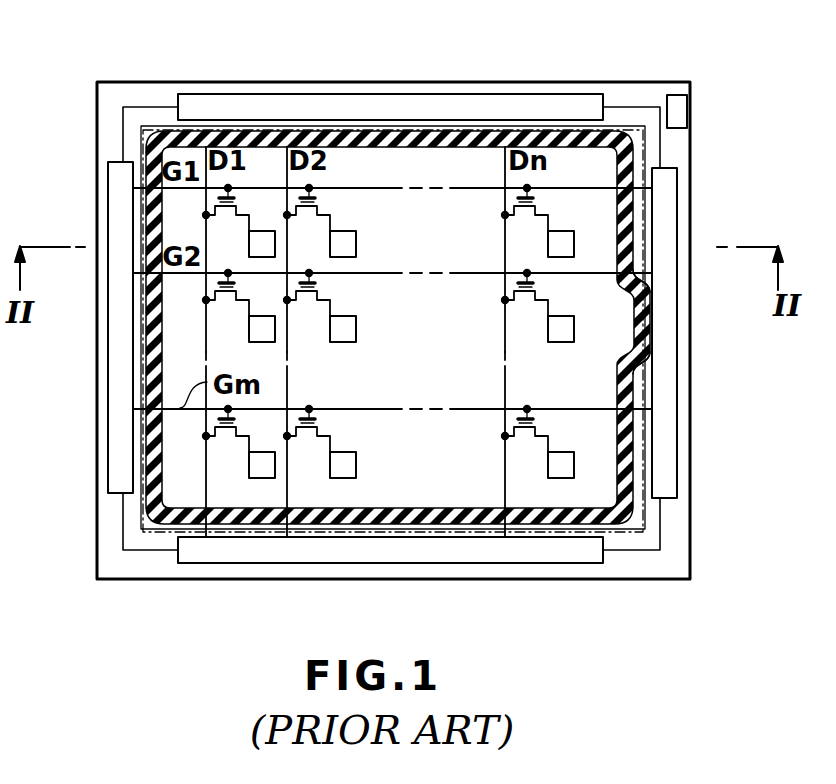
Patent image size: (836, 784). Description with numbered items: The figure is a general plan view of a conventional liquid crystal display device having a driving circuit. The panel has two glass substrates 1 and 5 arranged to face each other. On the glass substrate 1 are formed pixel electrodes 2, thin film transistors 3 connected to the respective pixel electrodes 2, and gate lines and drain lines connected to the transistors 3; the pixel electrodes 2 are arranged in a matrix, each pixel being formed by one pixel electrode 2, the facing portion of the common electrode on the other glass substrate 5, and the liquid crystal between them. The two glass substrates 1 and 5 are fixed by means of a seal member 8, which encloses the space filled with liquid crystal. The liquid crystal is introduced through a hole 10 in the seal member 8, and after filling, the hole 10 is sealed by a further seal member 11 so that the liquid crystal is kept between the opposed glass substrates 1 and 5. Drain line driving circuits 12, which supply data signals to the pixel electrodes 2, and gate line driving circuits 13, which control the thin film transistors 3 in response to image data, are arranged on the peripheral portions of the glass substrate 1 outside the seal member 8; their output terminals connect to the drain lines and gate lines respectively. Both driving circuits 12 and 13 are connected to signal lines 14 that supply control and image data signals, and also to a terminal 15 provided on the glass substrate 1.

The glass substrate 1 is at (593, 82).
The pixel electrode 2 is at (414, 356).
The thin film transistor 3 is at (387, 319).
The glass substrate 5 is at (163, 528).
The seal member 8 is at (151, 355).
The hole 10 is at (652, 312).
The seal member 11 is at (645, 355).
The drain line driving circuit 12 is at (176, 100).
The gate line driving circuit 13 is at (123, 160).
The signal line 14 is at (127, 103).
The terminal 15 is at (695, 106).